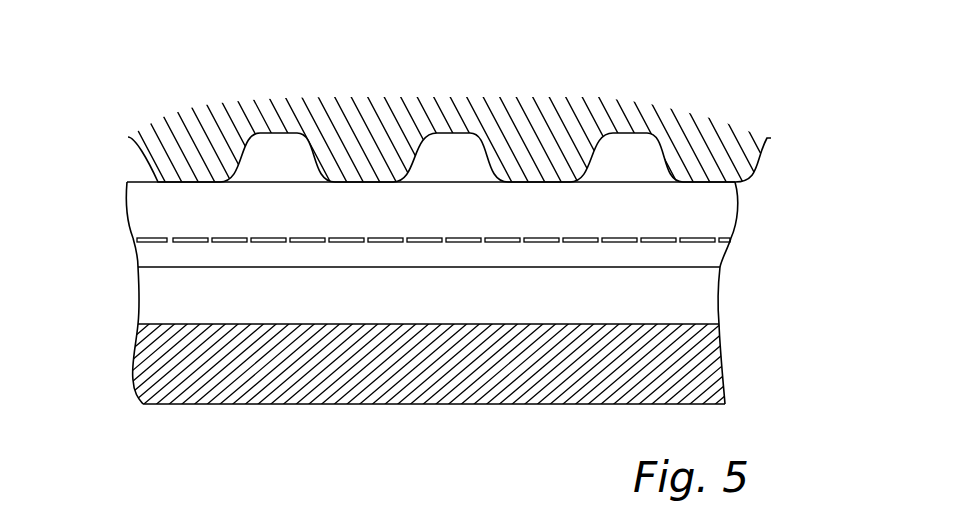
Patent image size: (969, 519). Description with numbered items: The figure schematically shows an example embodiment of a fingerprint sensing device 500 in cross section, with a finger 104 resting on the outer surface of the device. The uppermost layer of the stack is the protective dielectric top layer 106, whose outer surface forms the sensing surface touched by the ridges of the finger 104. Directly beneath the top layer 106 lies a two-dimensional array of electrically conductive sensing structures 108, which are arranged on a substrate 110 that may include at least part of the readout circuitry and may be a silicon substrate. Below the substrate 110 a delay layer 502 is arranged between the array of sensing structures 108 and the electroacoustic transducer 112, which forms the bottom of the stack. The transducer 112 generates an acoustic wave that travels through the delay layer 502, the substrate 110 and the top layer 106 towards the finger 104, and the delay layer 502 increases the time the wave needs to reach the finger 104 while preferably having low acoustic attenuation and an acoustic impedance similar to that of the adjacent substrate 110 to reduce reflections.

The fingerprint sensing device 500 is at (118, 157).
The finger 104 is at (768, 93).
The protective dielectric top layer 106 is at (735, 213).
The substrate 110 is at (722, 251).
The electrically conductive sensing structures 108 is at (148, 241).
The delay layer 502 is at (718, 300).
The electroacoustic transducer 112 is at (700, 368).